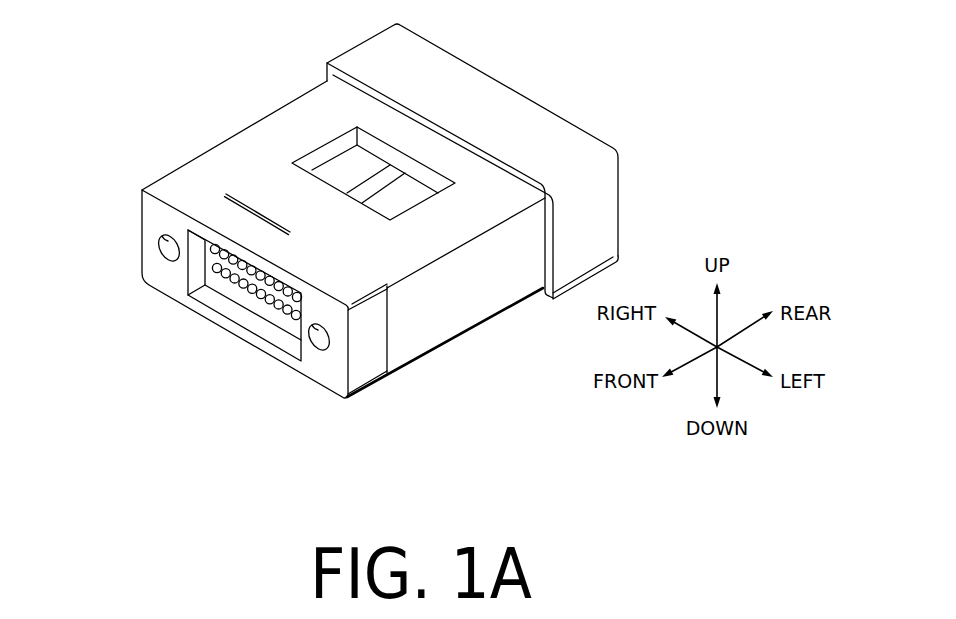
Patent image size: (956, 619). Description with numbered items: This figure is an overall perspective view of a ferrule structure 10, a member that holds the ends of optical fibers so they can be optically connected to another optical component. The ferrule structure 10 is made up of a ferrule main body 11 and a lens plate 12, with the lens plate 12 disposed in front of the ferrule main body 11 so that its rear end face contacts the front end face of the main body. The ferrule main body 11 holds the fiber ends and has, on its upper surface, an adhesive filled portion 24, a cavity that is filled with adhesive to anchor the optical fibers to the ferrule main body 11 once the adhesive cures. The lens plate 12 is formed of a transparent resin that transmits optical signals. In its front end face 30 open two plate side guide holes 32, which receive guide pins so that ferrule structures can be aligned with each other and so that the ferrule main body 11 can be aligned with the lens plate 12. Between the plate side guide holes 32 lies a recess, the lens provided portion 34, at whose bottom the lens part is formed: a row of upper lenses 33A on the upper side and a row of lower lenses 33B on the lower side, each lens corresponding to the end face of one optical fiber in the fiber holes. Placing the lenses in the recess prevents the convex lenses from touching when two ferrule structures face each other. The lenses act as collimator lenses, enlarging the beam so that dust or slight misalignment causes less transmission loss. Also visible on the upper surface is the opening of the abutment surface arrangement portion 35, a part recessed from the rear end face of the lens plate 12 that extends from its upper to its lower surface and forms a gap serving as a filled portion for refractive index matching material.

The ferrule structure 10 is at (172, 67).
The ferrule main body 11 is at (626, 268).
The lens plate 12 is at (418, 387).
The adhesive filled portion 24 is at (333, 156).
The front end face 30 is at (148, 220).
The plate side guide holes 32 is at (167, 255).
The upper lens 33A is at (238, 254).
The lower lens 33B is at (276, 307).
The lens provided portion 34 is at (206, 321).
The abutment surface arrangement portion 35 is at (279, 210).